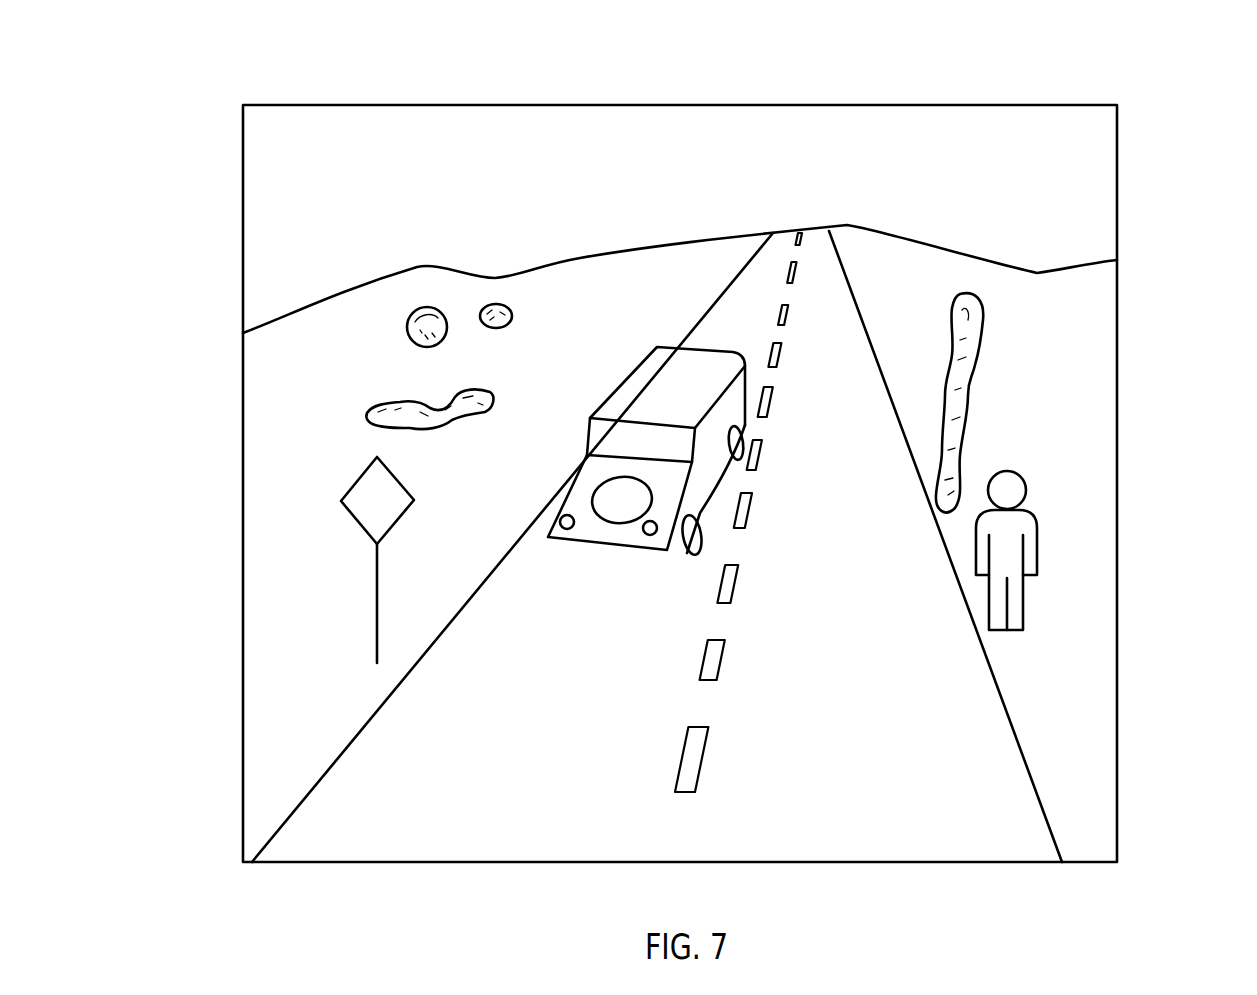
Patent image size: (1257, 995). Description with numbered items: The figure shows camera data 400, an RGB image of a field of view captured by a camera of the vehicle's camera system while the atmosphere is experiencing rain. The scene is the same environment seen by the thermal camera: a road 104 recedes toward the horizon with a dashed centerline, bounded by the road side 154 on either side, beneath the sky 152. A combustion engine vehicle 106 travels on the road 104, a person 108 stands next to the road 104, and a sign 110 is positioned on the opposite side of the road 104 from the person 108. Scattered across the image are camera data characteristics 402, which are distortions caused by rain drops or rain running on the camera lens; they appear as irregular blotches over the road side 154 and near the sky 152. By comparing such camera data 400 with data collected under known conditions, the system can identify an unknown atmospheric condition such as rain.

The camera data 400 is at (1062, 80).
The sky 152 is at (1100, 203).
The road side 154 is at (1092, 360).
The road 104 is at (1012, 820).
The combustion engine vehicle 106 is at (610, 397).
The person 108 is at (1028, 593).
The sign 110 is at (353, 482).
The camera data characteristic 402 is at (413, 312).